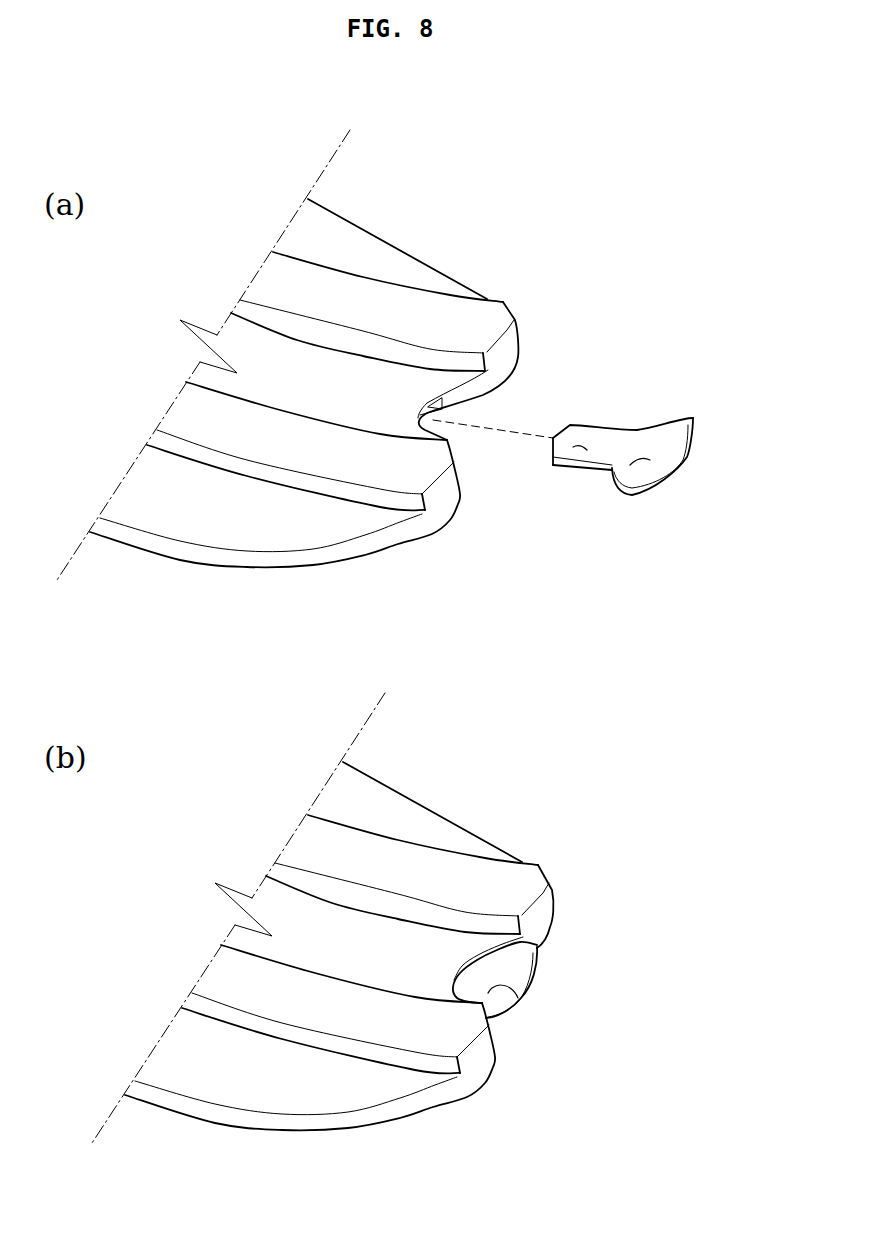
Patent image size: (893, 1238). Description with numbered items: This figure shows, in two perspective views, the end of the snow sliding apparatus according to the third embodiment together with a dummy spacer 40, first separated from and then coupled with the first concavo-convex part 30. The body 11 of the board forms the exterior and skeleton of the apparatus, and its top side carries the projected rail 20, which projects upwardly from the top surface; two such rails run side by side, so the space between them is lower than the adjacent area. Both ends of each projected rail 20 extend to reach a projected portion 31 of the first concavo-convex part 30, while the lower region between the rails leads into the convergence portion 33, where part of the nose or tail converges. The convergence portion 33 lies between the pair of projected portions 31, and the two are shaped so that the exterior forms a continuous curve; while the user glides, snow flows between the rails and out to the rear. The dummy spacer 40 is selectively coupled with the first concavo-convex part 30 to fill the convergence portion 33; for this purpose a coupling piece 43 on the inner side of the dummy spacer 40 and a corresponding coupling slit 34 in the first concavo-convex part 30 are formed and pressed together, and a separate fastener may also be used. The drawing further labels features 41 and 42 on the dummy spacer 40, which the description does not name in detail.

The body 11 is at (382, 243).
The projected rail 20 is at (457, 303).
The first concavo-convex part 30 is at (627, 347).
The projected portion 31 is at (507, 352).
The convergence portion 33 is at (453, 415).
The coupling slit 34 is at (418, 423).
The dummy spacer 40 is at (700, 410).
The pad body 41 is at (630, 465).
The curved pad edge 42 is at (688, 458).
The coupling piece 43 is at (573, 447).